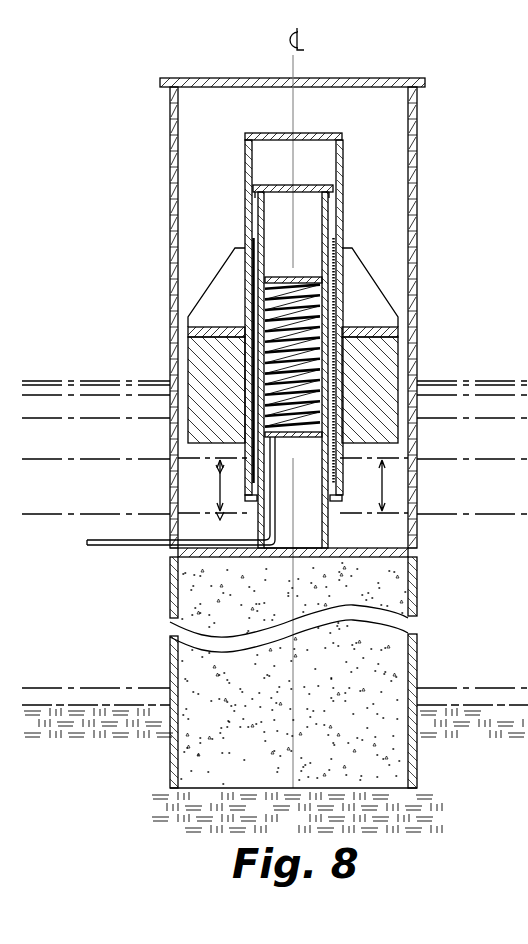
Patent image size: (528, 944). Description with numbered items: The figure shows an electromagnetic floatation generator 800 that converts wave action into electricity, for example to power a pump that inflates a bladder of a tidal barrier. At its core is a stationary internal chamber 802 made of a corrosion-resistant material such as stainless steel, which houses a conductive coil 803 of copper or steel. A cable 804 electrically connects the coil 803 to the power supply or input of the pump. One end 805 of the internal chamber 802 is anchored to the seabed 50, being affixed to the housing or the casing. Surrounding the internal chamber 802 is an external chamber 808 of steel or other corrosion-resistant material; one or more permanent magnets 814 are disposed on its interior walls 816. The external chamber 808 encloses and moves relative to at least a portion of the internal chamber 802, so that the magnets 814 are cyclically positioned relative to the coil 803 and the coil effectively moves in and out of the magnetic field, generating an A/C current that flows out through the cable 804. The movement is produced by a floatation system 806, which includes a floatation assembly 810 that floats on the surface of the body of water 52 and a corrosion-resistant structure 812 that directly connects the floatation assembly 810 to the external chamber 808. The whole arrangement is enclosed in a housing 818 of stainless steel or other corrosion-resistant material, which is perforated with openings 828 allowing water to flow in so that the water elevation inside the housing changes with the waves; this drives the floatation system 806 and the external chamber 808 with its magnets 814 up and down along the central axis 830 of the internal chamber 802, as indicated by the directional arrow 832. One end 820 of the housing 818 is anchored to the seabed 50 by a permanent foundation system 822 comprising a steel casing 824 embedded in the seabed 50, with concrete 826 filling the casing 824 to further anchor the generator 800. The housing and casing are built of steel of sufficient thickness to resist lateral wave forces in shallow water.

The electromagnetic floatation generator 800 is at (112, 100).
The central axis 830 is at (296, 61).
The housing 818 is at (166, 153).
The openings 828 is at (417, 244).
The external chamber 808 is at (343, 218).
The interior walls 816 is at (337, 175).
The internal chamber 802 is at (258, 215).
The permanent magnets 814 is at (336, 378).
The structure 812 is at (210, 280).
The floatation assembly 810 is at (398, 373).
The floatation system 806 is at (394, 294).
The conductive coil 803 is at (268, 383).
The directional arrow 832 is at (293, 485).
The body of water 52 is at (499, 449).
The end of housing 820 is at (428, 551).
The end of internal chamber 805 is at (336, 543).
The cable 804 is at (137, 546).
The steel casing 824 is at (168, 760).
The concrete 826 is at (264, 745).
The permanent foundation system 822 is at (427, 750).
The seabed 50 is at (498, 793).